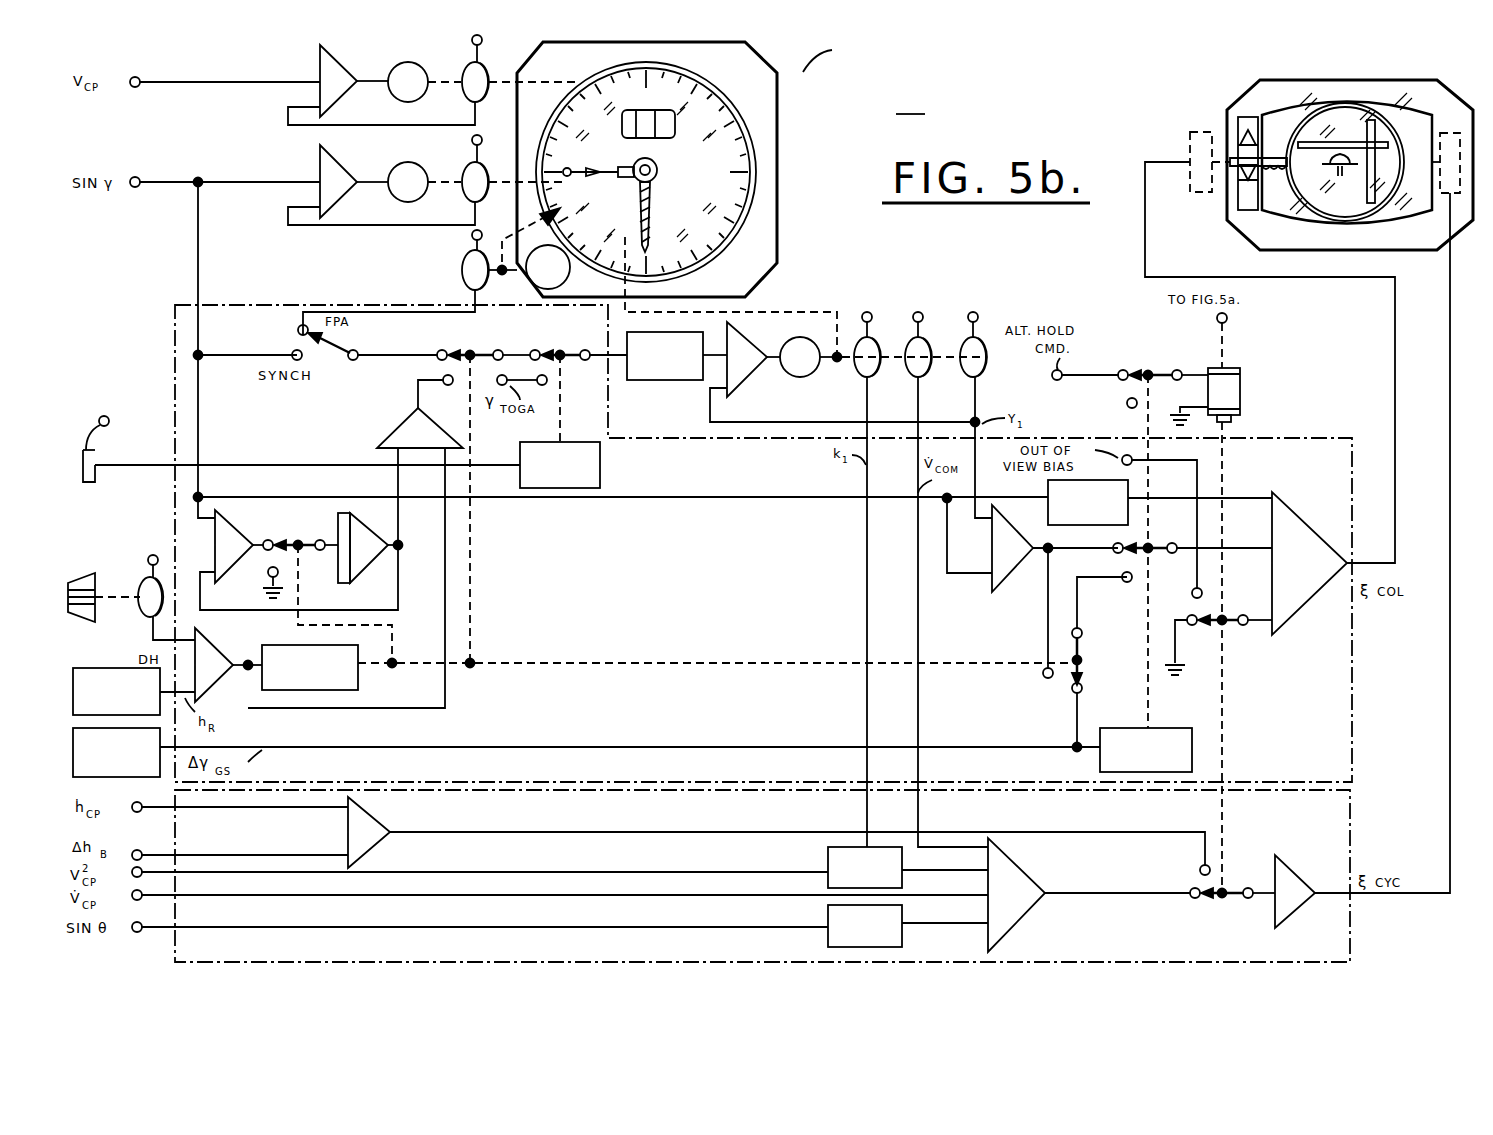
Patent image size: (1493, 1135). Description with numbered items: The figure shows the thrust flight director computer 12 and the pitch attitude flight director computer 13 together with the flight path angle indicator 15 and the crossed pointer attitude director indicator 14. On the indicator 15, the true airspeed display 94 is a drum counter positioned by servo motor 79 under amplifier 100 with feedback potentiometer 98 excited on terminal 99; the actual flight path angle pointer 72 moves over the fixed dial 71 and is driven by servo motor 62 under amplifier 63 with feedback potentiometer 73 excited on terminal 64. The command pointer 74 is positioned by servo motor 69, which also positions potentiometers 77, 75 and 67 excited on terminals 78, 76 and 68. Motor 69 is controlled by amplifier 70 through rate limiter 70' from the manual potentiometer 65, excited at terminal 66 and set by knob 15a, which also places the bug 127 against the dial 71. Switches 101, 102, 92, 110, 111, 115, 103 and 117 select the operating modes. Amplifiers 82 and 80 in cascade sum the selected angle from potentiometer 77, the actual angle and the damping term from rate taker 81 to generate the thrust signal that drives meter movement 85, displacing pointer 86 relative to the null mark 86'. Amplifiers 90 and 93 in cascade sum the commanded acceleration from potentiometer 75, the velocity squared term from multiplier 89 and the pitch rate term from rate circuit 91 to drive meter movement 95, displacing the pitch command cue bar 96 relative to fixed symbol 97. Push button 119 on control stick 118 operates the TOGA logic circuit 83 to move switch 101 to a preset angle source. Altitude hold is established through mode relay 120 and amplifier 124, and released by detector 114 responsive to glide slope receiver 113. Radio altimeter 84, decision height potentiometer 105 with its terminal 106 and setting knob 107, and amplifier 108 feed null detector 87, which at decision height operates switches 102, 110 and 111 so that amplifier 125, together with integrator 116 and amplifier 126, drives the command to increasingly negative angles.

The thrust flight director computer 12 is at (1352, 752).
The pitch attitude flight director computer 13 is at (1350, 828).
The crossed pointer attitude director indicator 14 is at (1311, 145).
The flight path angle indicator 15 is at (720, 199).
The control knob 15a is at (535, 289).
The servo motor 62 is at (395, 162).
The amplifier 63 is at (318, 160).
The terminal 64 is at (472, 140).
The potentiometer 65 is at (462, 277).
The terminal 66 is at (472, 236).
The potentiometer 67 is at (878, 372).
The terminal 68 is at (867, 312).
The servo motor 69 is at (822, 372).
The amplifier 70 is at (842, 372).
The rate limiter 70' is at (677, 378).
The fixed dial 71 is at (765, 228).
The pointer 72 is at (600, 147).
The position feedback potentiometer 73 is at (466, 190).
The pointer 74 is at (650, 195).
The potentiometer 75 is at (930, 372).
The terminal 76 is at (918, 312).
The potentiometer 77 is at (986, 364).
The terminal 78 is at (973, 312).
The servo motor 79 is at (395, 62).
The amplifier 80 is at (1010, 572).
The rate taker 81 is at (1048, 505).
The meter driving amplifier 82 is at (1312, 518).
The TOGA logic circuit 83 is at (600, 460).
The radio altimeter 84 is at (115, 668).
The meter movement 85 is at (1197, 130).
The pointer 86 is at (1243, 206).
The null mark 86' is at (1229, 135).
The null detector 87 is at (358, 680).
The multiplier 89 is at (828, 858).
The amplifier 90 is at (1020, 862).
The rate circuit 91 is at (828, 916).
The switch 92 is at (345, 348).
The meter driver amplifier 93 is at (1290, 865).
The true airspeed display 94 is at (680, 115).
The meter movement 95 is at (1450, 130).
The pitch command cue bar 96 is at (1330, 142).
The fixed reference symbol 97 is at (1332, 172).
The position feedback potentiometer 98 is at (468, 90).
The terminal 99 is at (482, 40).
The amplifier 100 is at (318, 60).
The switch 101 is at (567, 350).
The switch 102 is at (465, 348).
The switch 103 is at (1225, 900).
The potentiometer 105 is at (138, 620).
The terminal 106 is at (150, 555).
The decision height knob 107 is at (85, 573).
The amplifier 108 is at (218, 642).
The switch 110 is at (315, 560).
The switch 111 is at (1082, 648).
The glide slope receiver 113 is at (112, 778).
The detector 114 is at (1160, 728).
The switch 115 is at (1160, 558).
The integrator 116 is at (355, 512).
The switch 117 is at (1232, 628).
The TOGA lever 118 is at (95, 480).
The push button 119 is at (112, 412).
The mode relay 120 is at (1240, 382).
The amplifier 124 is at (380, 815).
The amplifier 125 is at (405, 420).
The amplifier 126 is at (228, 522).
The bug 127 is at (519, 234).